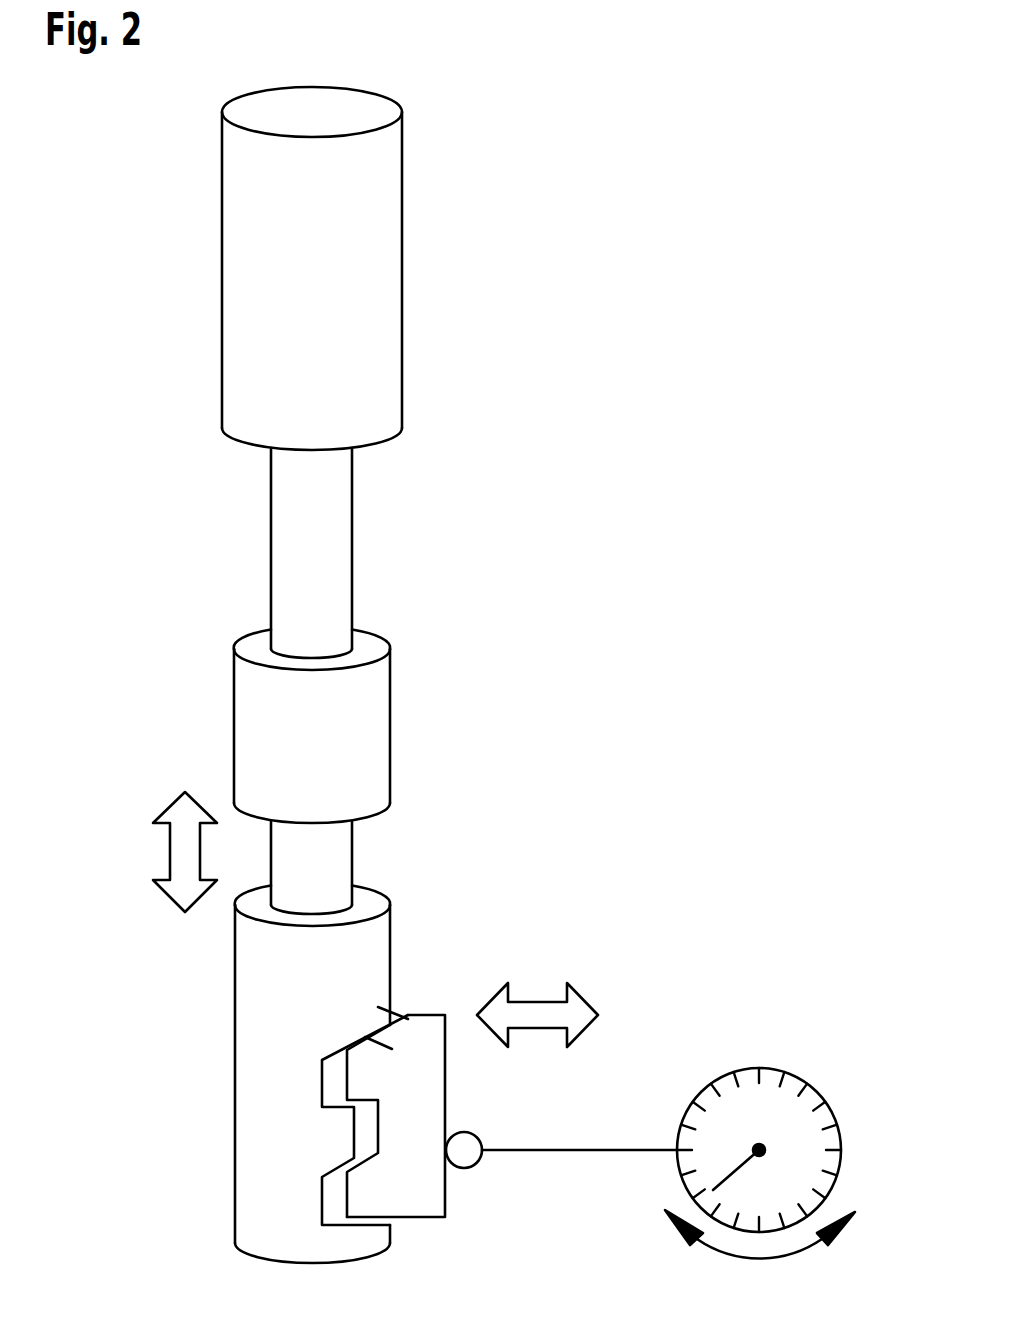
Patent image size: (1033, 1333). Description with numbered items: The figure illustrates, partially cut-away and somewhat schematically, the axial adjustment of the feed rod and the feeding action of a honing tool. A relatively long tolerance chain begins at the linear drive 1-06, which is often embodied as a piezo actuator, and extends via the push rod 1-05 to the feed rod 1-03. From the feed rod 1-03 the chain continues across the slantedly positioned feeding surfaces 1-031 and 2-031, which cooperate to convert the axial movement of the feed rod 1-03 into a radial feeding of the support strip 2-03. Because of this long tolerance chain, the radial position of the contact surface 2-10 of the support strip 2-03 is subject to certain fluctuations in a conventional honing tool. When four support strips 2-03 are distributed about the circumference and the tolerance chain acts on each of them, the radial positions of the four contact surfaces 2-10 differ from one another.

The linear drive 1-06 is at (360, 266).
The push rod 1-05 is at (333, 558).
The feed rod 1-03 is at (358, 730).
The feeding surface 1-031 is at (363, 1038).
The support strip 2-03 is at (417, 1182).
The feeding surface 2-031 is at (405, 1015).
The contact surface 2-10 is at (445, 1102).